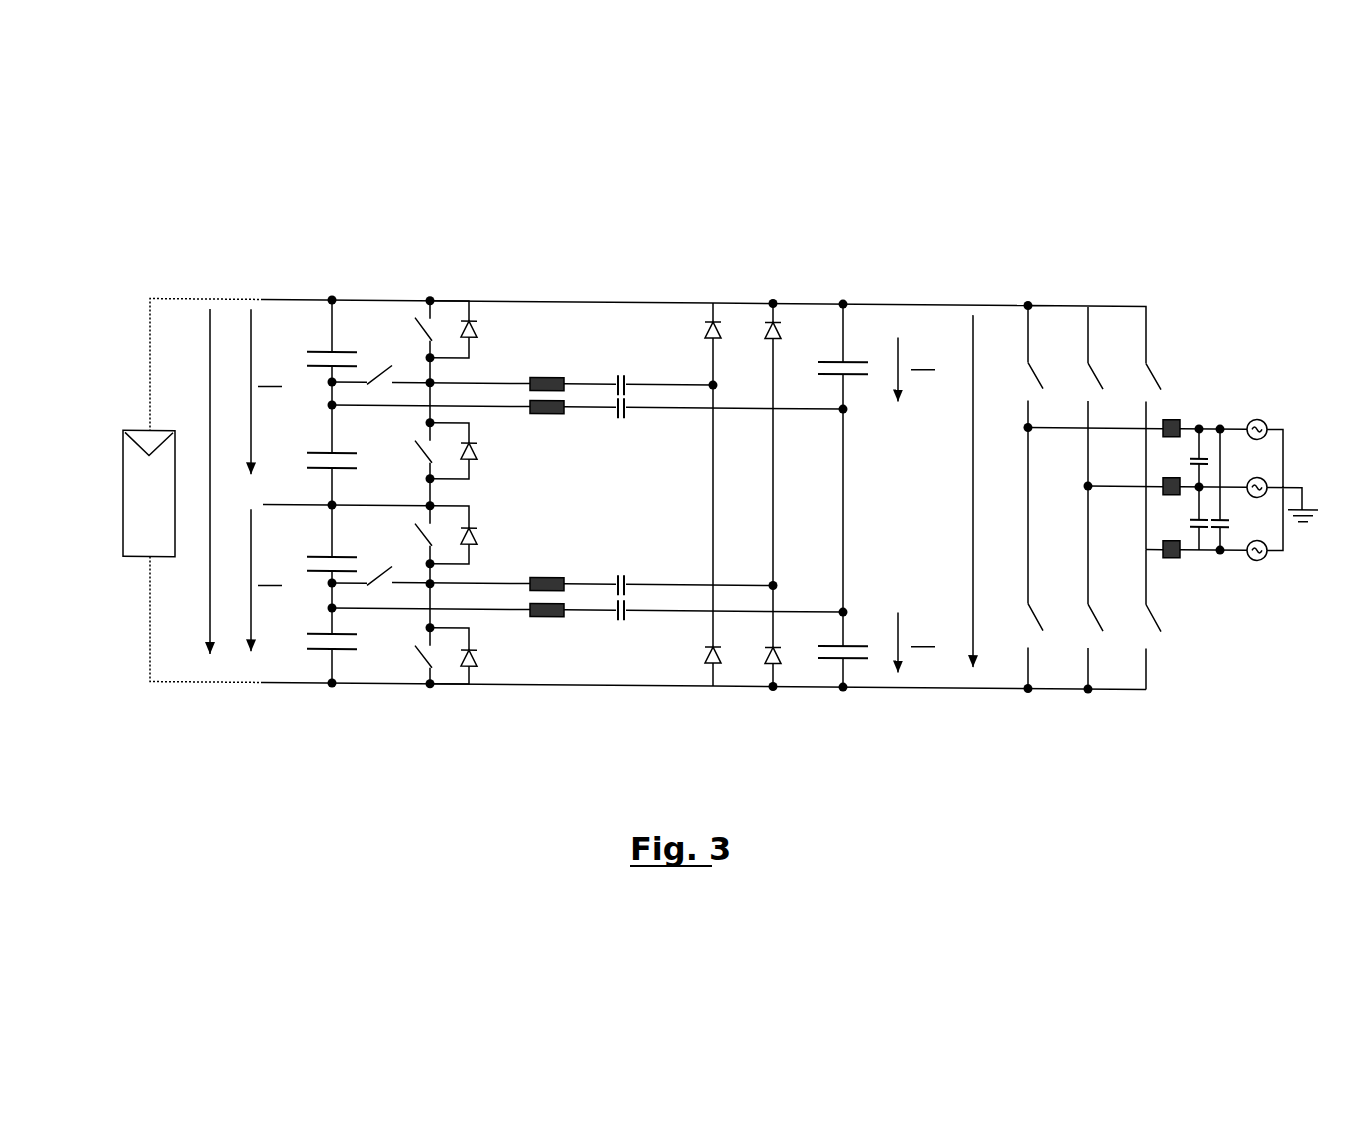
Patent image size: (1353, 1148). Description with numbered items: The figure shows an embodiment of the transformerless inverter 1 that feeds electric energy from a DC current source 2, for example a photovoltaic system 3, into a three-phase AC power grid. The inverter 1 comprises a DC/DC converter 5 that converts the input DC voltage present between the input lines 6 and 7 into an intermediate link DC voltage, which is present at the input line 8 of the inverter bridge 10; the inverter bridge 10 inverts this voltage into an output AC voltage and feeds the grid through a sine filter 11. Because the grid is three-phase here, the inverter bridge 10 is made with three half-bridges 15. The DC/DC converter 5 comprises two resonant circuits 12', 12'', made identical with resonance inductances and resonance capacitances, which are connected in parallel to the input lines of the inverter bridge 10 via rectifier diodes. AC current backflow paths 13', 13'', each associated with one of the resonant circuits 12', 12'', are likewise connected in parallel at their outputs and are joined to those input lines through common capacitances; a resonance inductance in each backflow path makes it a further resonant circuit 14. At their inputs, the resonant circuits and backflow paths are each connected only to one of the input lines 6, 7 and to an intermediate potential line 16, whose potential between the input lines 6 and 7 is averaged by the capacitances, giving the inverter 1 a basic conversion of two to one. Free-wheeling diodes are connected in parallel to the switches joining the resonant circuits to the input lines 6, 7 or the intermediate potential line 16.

The transformerless inverter 1 is at (632, 252).
The DC current source 2 is at (114, 450).
The photovoltaic system 3 is at (122, 488).
The DC/DC converter 5 is at (466, 706).
The input line 6 is at (303, 300).
The input line 7 is at (262, 685).
The input line of inverter bridge 8 is at (1003, 300).
The inverter bridge 10 is at (1090, 288).
The sine filter 11 is at (1205, 392).
The resonant circuit 12' is at (552, 336).
The AC current backflow path 13' is at (587, 447).
The resonant circuit 12'' is at (582, 548).
The AC current backflow path 13'' is at (587, 657).
The further resonant circuit 14 is at (1258, 392).
The half-bridge 15 is at (1024, 708).
The intermediate potential line 16 is at (363, 507).